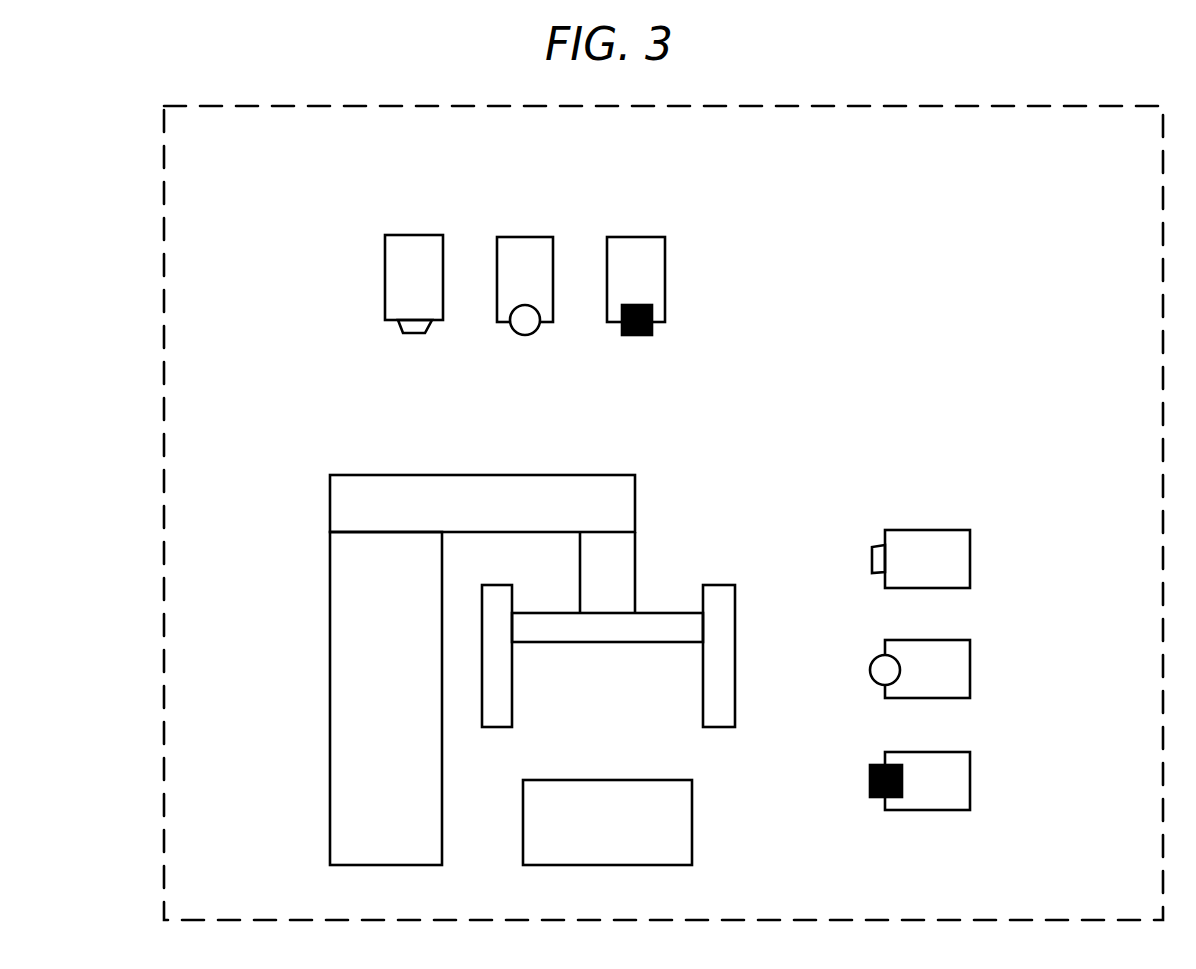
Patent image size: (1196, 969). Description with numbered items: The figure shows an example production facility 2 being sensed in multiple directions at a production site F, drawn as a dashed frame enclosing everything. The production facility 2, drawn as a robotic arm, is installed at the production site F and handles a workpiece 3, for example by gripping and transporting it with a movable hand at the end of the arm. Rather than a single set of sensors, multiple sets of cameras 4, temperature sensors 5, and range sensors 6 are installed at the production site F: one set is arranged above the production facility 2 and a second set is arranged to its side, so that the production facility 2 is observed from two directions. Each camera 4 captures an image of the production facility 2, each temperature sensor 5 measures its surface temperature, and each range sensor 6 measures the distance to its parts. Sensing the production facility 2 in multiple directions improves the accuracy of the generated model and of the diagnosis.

The production site F is at (163, 245).
The production facility 2 is at (553, 475).
The workpiece 3 is at (607, 780).
The camera 4 is at (413, 235).
The temperature sensor 5 is at (524, 237).
The range sensor 6 is at (636, 237).